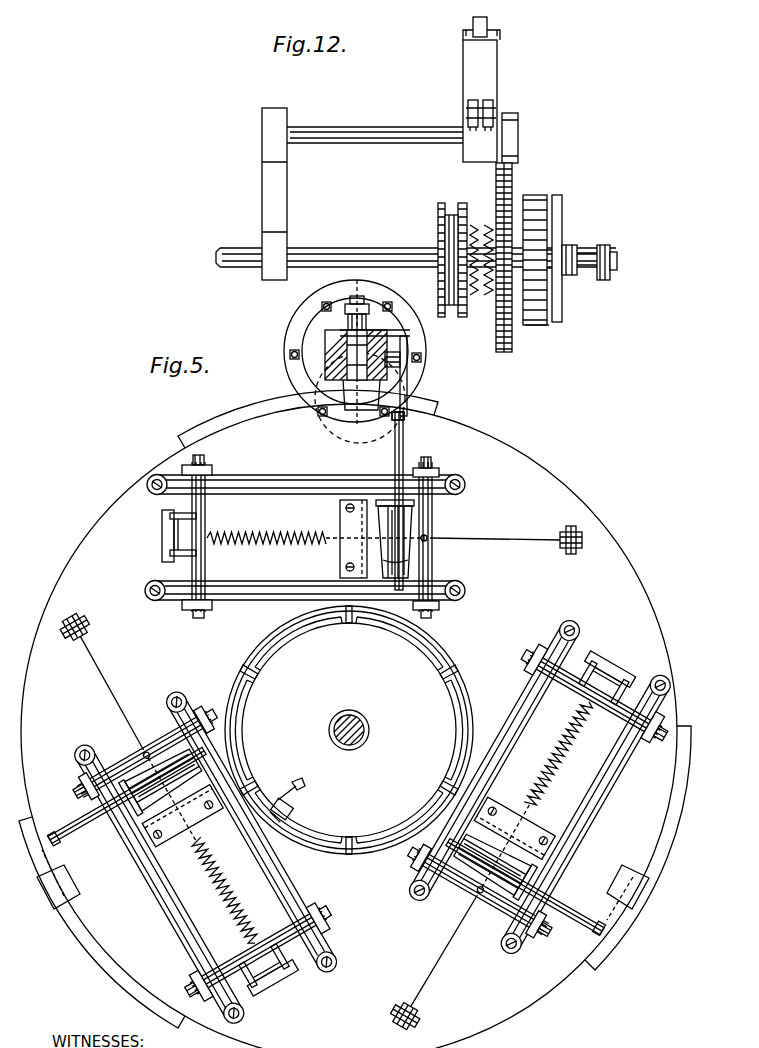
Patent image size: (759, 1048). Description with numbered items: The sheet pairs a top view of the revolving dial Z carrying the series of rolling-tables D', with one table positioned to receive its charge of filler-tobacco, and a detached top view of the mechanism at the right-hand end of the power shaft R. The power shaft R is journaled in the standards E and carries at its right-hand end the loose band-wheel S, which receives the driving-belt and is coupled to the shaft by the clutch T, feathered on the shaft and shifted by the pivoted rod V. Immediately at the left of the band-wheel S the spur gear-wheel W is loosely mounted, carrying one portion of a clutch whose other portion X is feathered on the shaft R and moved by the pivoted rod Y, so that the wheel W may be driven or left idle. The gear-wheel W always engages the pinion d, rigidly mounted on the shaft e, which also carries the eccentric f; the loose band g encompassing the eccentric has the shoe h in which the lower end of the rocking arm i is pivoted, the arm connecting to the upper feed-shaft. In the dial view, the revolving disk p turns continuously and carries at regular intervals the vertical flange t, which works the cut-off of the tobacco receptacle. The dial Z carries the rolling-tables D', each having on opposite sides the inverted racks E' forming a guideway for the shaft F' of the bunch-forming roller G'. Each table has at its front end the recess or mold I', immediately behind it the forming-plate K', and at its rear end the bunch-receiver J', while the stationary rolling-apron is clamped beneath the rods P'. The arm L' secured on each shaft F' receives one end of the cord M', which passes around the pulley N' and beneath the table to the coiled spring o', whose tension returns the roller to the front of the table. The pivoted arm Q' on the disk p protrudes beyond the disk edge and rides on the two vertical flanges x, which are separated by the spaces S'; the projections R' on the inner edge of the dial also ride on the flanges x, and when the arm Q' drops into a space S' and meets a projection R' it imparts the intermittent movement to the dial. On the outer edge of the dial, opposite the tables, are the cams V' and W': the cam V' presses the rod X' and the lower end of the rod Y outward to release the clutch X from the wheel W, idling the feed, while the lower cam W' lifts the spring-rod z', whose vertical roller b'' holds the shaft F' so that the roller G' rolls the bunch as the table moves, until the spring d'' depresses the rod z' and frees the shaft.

In FIG. 12, the shaft e is at (380, 145).
In FIG. 12, the power shaft R is at (416, 250).
In FIG. 5, the power shaft R is at (354, 370).
In FIG. 12, the standards E is at (281, 194).
In FIG. 12, the eccentric f is at (486, 101).
In FIG. 12, the loose band g is at (478, 66).
In FIG. 12, the shoe h is at (500, 40).
In FIG. 12, the rocking arm i is at (488, 29).
In FIG. 12, the pinion d is at (521, 138).
In FIG. 12, the spur gear-wheel W is at (518, 257).
In FIG. 12, the clutch portion X is at (465, 264).
In FIG. 12, the pivoted rod Y is at (450, 305).
In FIG. 5, the pivoted rod Y is at (355, 351).
In FIG. 12, the clutch T is at (561, 218).
In FIG. 12, the pivoted rod V is at (589, 279).
In FIG. 12, the band-wheel S is at (536, 340).
In FIG. 5, the revolving disk p is at (349, 726).
In FIG. 5, the cam W' is at (362, 709).
In FIG. 5, the cam V' is at (344, 636).
In FIG. 5, the vertical flanges x is at (230, 694).
In FIG. 5, the vertical flange t is at (243, 717).
In FIG. 5, the projections R' is at (348, 734).
In FIG. 5, the spaces S' is at (359, 741).
In FIG. 5, the coiled spring o' is at (420, 810).
In FIG. 5, the pivoted arm Q' is at (292, 803).
In FIG. 5, the dial Z is at (354, 935).
In FIG. 5, the rod X' is at (355, 359).
In FIG. 5, the spring d'' is at (404, 351).
In FIG. 5, the spring-rod z' is at (410, 376).
In FIG. 5, the vertical roller b'' is at (406, 424).
In FIG. 5, the inverted racks E' is at (377, 684).
In FIG. 5, the rods P' is at (355, 693).
In FIG. 5, the bunch-receiver J' is at (366, 755).
In FIG. 5, the rolling-tables D' is at (379, 696).
In FIG. 5, the forming-plates K' is at (339, 670).
In FIG. 5, the recess or mold I' is at (331, 674).
In FIG. 5, the roller G' is at (325, 699).
In FIG. 5, the arm L' is at (300, 725).
In FIG. 5, the shaft F' is at (330, 651).
In FIG. 5, the cord M' is at (335, 738).
In FIG. 5, the pulley N' is at (326, 763).